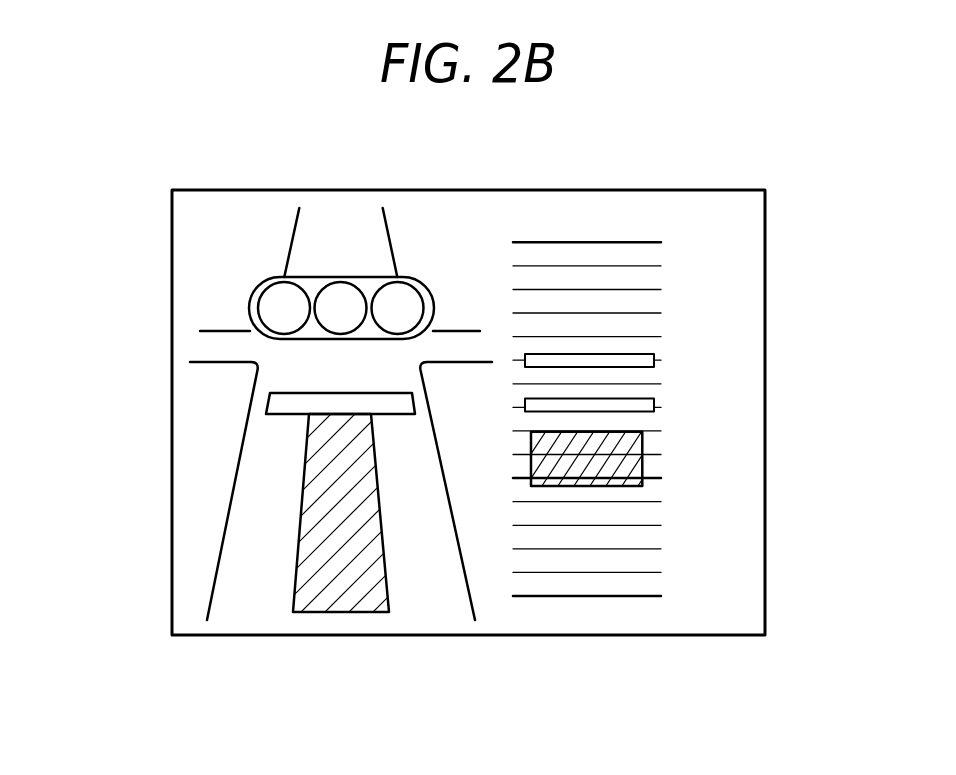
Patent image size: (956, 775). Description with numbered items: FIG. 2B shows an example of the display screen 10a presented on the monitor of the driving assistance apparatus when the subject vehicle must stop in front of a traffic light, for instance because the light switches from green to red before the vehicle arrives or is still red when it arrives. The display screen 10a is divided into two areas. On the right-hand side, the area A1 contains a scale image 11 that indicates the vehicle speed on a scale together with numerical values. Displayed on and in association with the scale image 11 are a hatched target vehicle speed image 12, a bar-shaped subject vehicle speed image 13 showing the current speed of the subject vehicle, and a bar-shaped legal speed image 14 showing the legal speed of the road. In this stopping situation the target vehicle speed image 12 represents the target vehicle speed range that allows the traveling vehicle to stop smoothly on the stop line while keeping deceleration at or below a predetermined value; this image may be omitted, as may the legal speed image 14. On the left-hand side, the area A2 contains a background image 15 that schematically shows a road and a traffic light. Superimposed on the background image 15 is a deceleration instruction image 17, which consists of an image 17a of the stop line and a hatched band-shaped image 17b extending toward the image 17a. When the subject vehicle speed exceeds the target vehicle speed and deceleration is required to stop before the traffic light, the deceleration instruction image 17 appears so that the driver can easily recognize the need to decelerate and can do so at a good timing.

The display screen 10a is at (464, 215).
The area A1 is at (643, 414).
The area A2 is at (328, 222).
The scale image 11 is at (615, 597).
The target vehicle speed image 12 is at (615, 487).
The subject vehicle speed image 13 is at (617, 412).
The legal speed image 14 is at (625, 353).
The background image 15 is at (260, 610).
The deceleration instruction image 17 is at (332, 493).
The image of the stop line 17a is at (300, 392).
The band-shaped image 17b is at (297, 507).